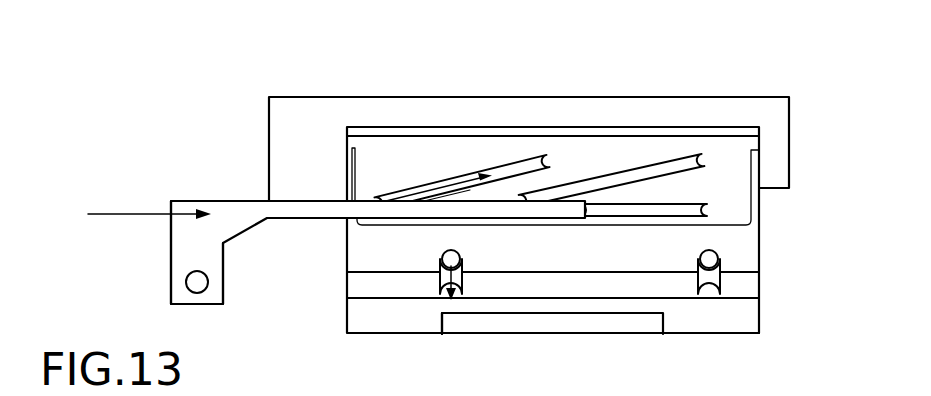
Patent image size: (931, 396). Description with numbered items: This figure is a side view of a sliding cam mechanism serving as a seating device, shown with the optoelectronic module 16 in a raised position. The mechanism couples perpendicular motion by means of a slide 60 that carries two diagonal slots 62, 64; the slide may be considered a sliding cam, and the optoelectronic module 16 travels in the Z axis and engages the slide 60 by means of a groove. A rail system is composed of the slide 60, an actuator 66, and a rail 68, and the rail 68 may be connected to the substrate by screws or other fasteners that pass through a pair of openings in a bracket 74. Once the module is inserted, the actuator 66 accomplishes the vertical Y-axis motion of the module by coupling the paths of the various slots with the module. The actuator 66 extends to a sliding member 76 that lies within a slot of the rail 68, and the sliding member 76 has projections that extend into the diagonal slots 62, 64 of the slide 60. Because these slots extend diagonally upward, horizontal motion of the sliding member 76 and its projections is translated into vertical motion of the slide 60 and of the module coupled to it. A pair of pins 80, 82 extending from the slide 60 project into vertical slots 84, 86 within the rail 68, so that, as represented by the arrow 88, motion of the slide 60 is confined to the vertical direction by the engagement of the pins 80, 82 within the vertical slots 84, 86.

The optoelectronic module 16 is at (305, 108).
The slide 60 is at (730, 148).
The diagonal slot 62 is at (528, 157).
The diagonal slot 64 is at (648, 163).
The actuator 66 is at (177, 260).
The rail 68 is at (743, 268).
The bracket 74 is at (580, 328).
The sliding member 76 is at (332, 213).
The pin 80 is at (440, 250).
The pin 82 is at (718, 258).
The vertical slot 84 is at (452, 312).
The vertical slot 86 is at (709, 305).
The arrow 88 is at (440, 284).